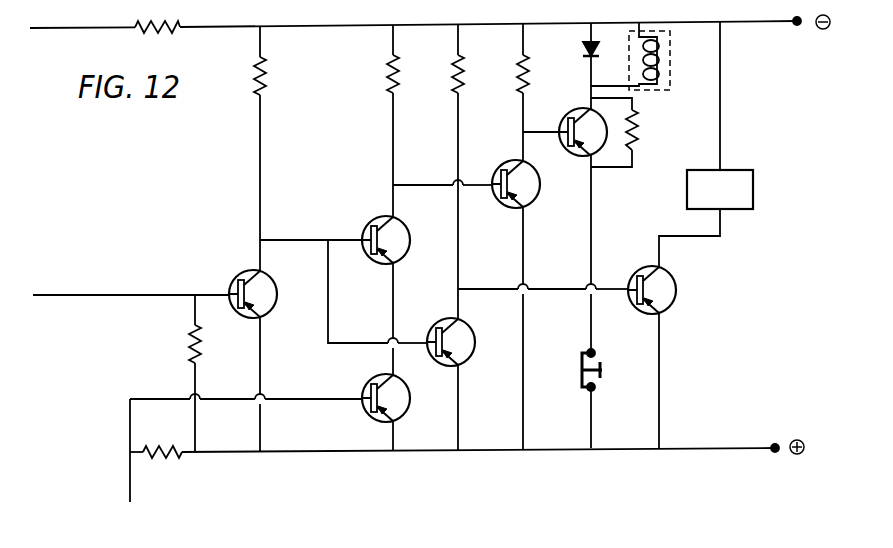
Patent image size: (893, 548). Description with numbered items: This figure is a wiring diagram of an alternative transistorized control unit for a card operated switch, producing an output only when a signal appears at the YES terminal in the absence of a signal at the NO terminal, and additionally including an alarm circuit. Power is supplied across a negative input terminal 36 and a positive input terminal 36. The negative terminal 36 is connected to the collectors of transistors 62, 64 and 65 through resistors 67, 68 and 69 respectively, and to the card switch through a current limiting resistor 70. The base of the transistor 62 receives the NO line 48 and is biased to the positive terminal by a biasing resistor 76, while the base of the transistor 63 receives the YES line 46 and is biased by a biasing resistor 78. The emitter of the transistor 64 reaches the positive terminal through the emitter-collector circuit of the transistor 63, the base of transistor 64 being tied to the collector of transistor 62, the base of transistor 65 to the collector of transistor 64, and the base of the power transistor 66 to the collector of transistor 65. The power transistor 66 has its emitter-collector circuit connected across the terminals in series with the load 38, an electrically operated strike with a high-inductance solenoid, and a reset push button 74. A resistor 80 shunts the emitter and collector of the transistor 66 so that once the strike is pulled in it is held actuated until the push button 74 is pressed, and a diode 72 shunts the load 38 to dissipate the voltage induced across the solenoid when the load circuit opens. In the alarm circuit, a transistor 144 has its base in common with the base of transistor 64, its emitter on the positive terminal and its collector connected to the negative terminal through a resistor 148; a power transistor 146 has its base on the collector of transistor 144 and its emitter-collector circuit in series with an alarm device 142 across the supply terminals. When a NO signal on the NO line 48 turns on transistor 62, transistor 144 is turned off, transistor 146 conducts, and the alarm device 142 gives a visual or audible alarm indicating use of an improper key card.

The current limiting resistor 70 is at (183, 33).
The resistor 67 is at (272, 72).
The resistor 68 is at (384, 78).
The resistor 148 is at (456, 93).
The resistor 69 is at (530, 58).
The diode 72 is at (600, 46).
The load 38 is at (657, 31).
The input terminal 36 is at (792, 28).
The resistor 80 is at (646, 131).
The alarm device 142 is at (758, 187).
The power transistor 66 is at (576, 158).
The transistor 65 is at (512, 210).
The transistor 64 is at (376, 264).
The transistor 144 is at (468, 331).
The power transistor 146 is at (678, 286).
The reset push button 74 is at (607, 366).
The NO line 48 is at (50, 293).
The transistor 62 is at (246, 320).
The biasing resistor 76 is at (205, 359).
The transistor 63 is at (411, 401).
The biasing resistor 78 is at (151, 445).
The YES line 46 is at (133, 497).